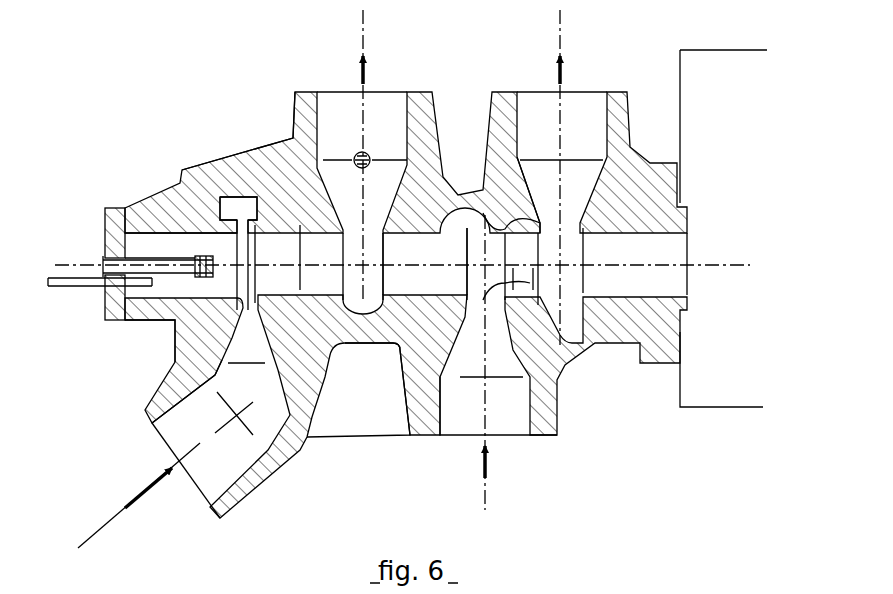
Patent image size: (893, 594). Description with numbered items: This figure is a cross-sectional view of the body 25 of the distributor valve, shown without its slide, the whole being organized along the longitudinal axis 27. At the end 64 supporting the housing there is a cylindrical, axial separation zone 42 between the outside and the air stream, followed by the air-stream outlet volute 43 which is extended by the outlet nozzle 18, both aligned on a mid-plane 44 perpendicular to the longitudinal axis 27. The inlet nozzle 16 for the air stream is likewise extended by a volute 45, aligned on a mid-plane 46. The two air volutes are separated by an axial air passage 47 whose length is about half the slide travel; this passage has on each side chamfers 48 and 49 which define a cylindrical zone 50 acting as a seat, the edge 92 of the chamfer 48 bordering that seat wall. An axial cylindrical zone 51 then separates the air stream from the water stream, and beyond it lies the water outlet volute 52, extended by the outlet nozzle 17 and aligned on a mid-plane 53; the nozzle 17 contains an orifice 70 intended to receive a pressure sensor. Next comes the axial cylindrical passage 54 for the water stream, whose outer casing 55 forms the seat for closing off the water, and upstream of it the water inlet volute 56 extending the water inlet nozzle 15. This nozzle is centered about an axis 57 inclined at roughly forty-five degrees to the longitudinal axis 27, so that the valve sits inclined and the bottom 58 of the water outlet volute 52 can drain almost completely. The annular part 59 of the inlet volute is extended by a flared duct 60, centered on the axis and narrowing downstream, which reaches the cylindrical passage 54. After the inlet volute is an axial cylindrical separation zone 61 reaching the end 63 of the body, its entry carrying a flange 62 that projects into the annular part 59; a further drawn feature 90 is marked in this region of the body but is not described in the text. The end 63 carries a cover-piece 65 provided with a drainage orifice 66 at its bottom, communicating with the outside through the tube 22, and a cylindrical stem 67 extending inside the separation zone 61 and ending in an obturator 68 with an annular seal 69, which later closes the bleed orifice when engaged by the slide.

The water inlet nozzle 15 is at (203, 436).
The inlet nozzle for the air stream 16 is at (470, 424).
The outlet nozzle for the water stream 17 is at (347, 139).
The outlet nozzle 18 is at (553, 139).
The tube 22 is at (80, 278).
The body 25 is at (290, 158).
The longitudinal axis 27 is at (745, 262).
The separation zone 42 is at (642, 263).
The air-stream outlet volute 43 is at (574, 263).
The mid-plane 44 is at (562, 33).
The volute 45 is at (498, 263).
The mid-plane 46 is at (487, 500).
The axial air passage 47 is at (537, 263).
The chamfer 48 is at (483, 215).
The chamfer 49 is at (538, 233).
The cylindrical zone 50 is at (523, 282).
The axial cylindrical zone 51 is at (435, 263).
The water outlet volute 52 is at (377, 263).
The mid-plane 53 is at (365, 28).
The axial cylindrical passage 54 is at (335, 263).
The outer casing 55 is at (325, 290).
The water inlet volute 56 is at (263, 397).
The axis 57 is at (124, 510).
The bottom of the water outlet volute 58 is at (352, 313).
The annular part 59 is at (222, 215).
The flared duct 60 is at (293, 263).
The cylindrical separation zone 61 is at (150, 235).
The flange 62 is at (165, 370).
The end of the body 63 is at (125, 318).
The end supporting the housing 64 is at (668, 368).
The cover-piece 65 is at (103, 212).
The drainage orifice 66 is at (105, 308).
The cylindrical stem 67 is at (140, 225).
The obturator 68 is at (165, 240).
The annular seal 69 is at (168, 243).
The orifice 70 is at (371, 160).
The labyrinth seal groove 90 is at (238, 212).
The edge of the chamfer 92 is at (510, 280).